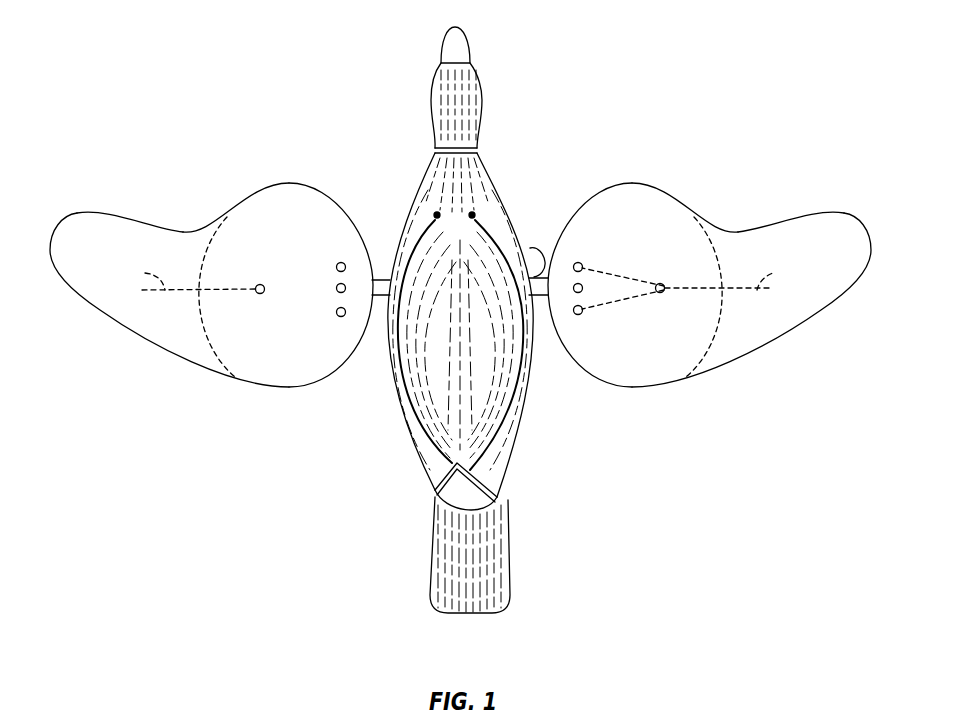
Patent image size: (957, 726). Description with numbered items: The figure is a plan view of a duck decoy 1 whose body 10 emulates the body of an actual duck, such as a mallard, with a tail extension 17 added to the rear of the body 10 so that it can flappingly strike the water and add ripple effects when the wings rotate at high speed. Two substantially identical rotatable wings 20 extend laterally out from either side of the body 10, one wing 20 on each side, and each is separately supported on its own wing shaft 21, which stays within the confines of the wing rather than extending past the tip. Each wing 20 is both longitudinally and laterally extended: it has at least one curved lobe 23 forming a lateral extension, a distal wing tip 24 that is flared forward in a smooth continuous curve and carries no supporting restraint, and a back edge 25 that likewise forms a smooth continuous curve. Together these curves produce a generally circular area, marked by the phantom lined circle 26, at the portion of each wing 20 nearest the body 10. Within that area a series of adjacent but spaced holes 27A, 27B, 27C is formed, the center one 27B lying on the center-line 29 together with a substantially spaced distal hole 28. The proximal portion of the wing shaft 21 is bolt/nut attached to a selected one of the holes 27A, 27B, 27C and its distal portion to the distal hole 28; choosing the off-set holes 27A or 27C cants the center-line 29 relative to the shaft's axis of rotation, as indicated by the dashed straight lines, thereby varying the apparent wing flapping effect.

The duck decoy 1 is at (518, 66).
The body 10 is at (499, 203).
The tail extension 17 is at (512, 590).
The rotatable wing 20 is at (265, 372).
The wing shaft 21 is at (380, 278).
The curved lobe 23 is at (282, 183).
The distal wing tip 24 is at (80, 212).
The back edge 25 is at (295, 388).
The phantom lined circle 26 is at (243, 332).
The off-set hole 27A is at (340, 317).
The center proximal hole 27B is at (337, 288).
The off-set hole 27C is at (338, 263).
The distal hole 28 is at (258, 285).
The center-line 29 is at (457, 284).